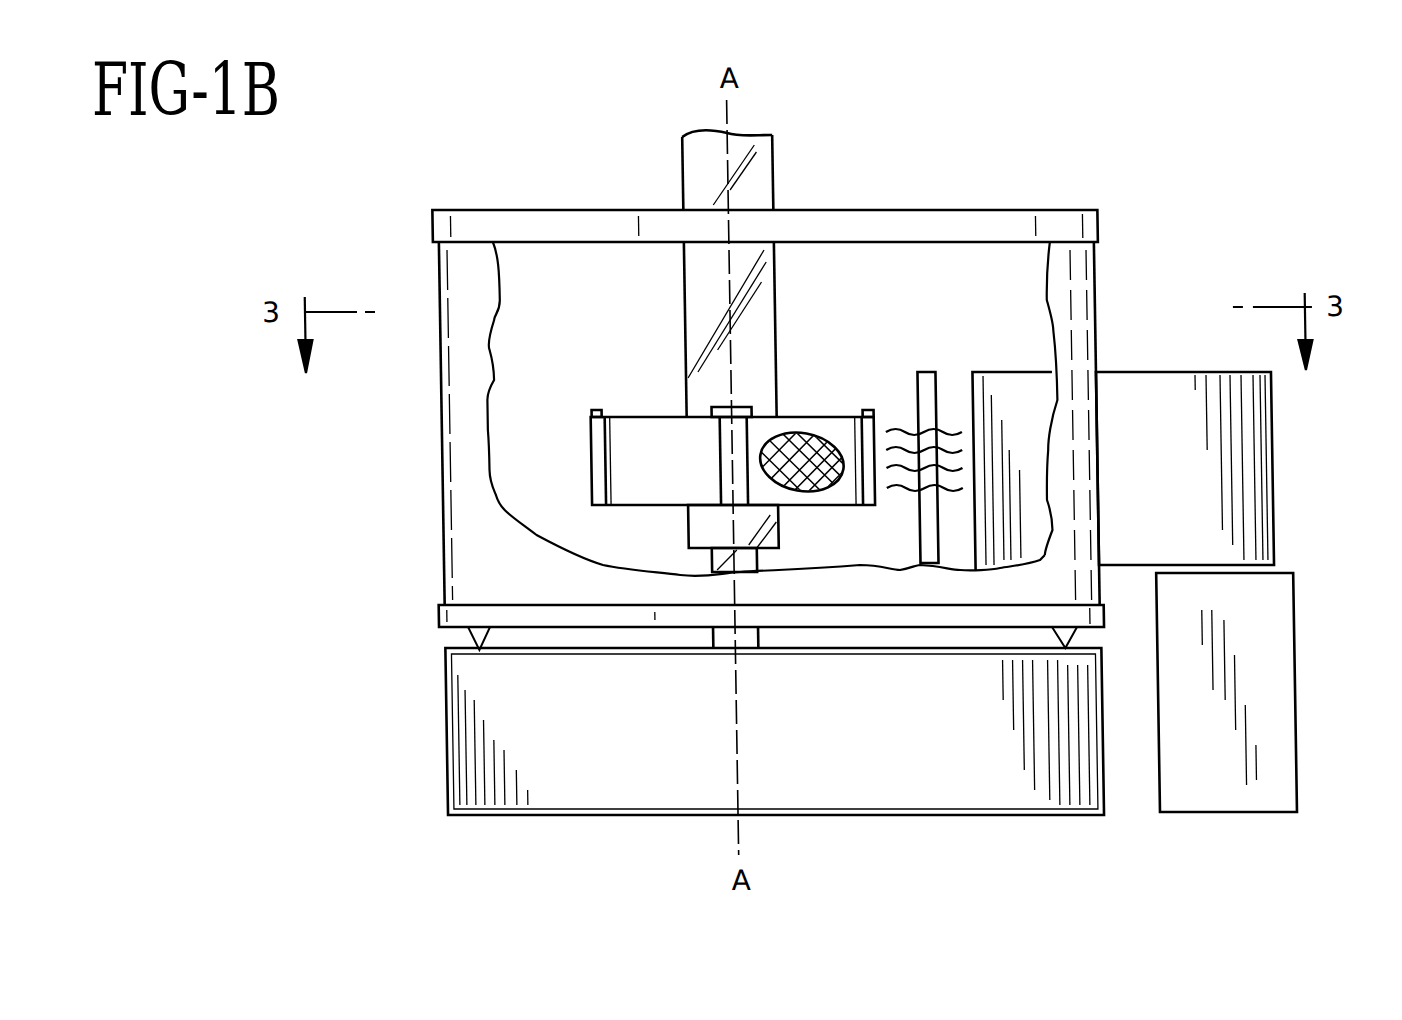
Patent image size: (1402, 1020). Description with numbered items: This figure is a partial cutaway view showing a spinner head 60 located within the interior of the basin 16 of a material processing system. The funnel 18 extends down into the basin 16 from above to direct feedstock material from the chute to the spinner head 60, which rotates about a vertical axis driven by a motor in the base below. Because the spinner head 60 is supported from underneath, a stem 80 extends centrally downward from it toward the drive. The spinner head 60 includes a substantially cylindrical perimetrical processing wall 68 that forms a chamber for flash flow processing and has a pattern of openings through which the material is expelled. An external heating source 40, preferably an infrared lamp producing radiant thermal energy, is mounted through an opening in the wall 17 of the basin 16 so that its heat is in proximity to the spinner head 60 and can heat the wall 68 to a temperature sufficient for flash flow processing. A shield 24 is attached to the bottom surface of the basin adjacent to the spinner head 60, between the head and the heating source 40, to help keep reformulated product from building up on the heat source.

The basin 16 is at (437, 225).
The wall 17 is at (442, 568).
The funnel 18 is at (688, 178).
The shield 24 is at (929, 372).
The external heating source 40 is at (1273, 413).
The spinner head 60 is at (593, 452).
The perimetrical processing wall 68 is at (803, 443).
The stem 80 is at (764, 533).